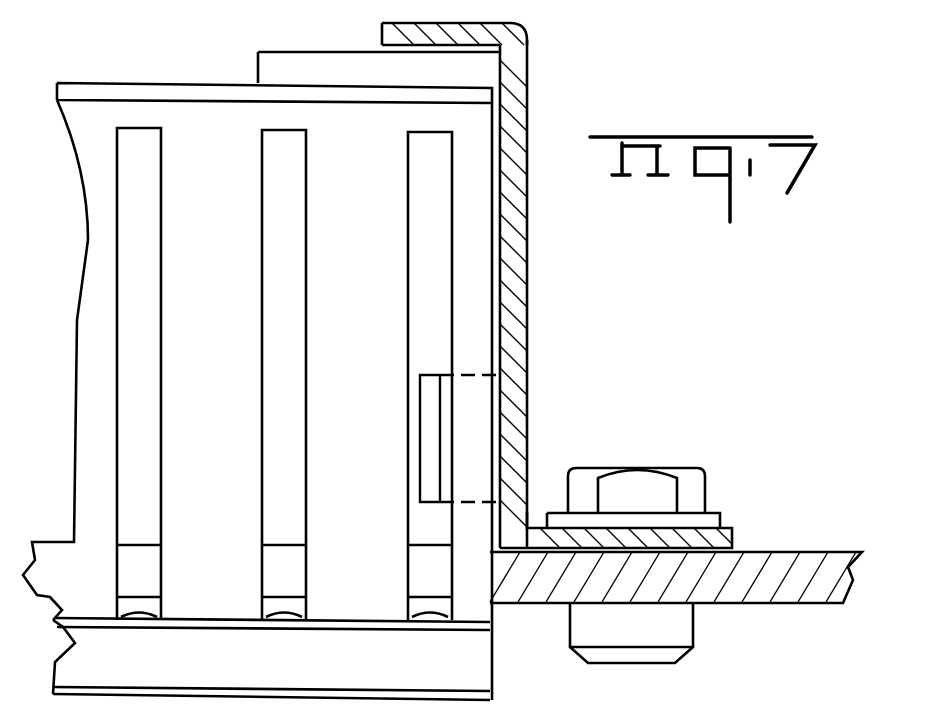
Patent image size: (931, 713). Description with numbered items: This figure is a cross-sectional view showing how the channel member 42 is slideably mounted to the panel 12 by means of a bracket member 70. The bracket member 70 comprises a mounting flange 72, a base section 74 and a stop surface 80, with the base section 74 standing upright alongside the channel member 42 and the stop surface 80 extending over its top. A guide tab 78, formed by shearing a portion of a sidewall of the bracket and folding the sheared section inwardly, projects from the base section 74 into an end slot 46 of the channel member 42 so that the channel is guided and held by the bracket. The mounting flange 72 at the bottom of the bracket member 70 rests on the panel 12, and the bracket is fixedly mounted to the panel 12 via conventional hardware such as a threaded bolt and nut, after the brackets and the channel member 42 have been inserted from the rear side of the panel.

The panel 12 is at (765, 572).
The channel member 42 is at (190, 78).
The end slot 46 is at (442, 317).
The bracket member 70 is at (569, 285).
The mounting flange 72 is at (727, 537).
The base section 74 is at (517, 233).
The guide tab 78 is at (428, 428).
The stop surface 80 is at (440, 33).